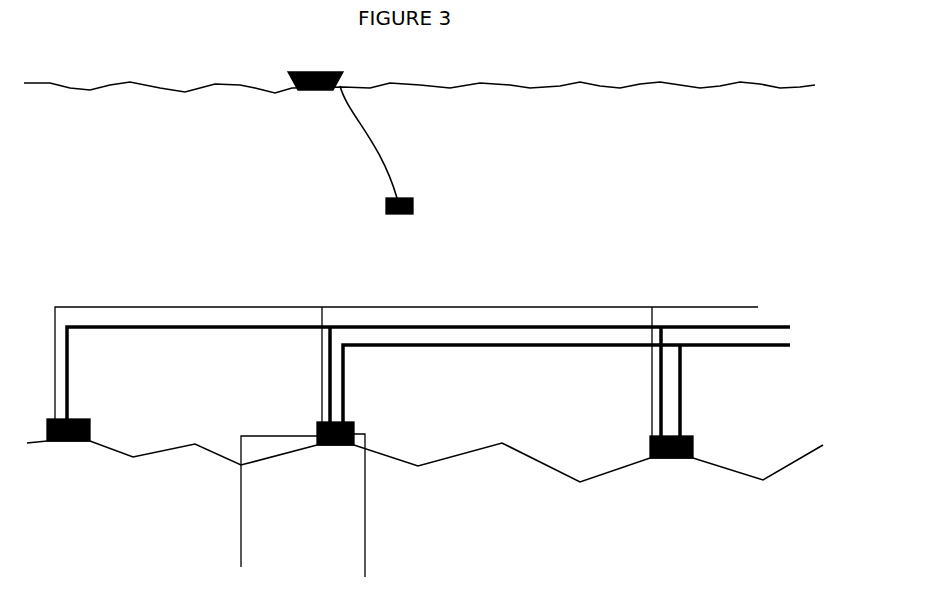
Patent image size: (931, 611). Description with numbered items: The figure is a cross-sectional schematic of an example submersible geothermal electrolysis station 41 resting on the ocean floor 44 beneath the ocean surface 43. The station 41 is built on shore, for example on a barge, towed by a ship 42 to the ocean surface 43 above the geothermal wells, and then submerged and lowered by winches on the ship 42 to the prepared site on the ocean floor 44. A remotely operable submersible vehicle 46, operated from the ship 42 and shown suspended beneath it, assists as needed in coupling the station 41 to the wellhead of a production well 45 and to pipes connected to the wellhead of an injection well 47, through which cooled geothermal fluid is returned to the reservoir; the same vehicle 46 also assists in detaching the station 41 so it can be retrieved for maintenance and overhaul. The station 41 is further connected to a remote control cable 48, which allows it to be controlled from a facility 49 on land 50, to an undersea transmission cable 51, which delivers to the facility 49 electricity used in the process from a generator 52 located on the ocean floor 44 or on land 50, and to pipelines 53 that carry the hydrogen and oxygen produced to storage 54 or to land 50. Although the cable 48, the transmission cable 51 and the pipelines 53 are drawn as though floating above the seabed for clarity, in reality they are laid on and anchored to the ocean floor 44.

The station 41 is at (358, 427).
The ship 42 is at (305, 65).
The ocean surface 43 is at (513, 78).
The ocean floor 44 is at (117, 458).
The production well 45 is at (377, 505).
The remotely operable submersible vehicle 46 is at (393, 152).
The injection well 47 is at (279, 501).
The remote control cable 48 is at (406, 357).
The facility 49 is at (802, 306).
The land 50 is at (820, 336).
The undersea transmission cable 51 is at (428, 381).
The generator 52 is at (60, 445).
The pipelines 53 is at (566, 390).
The storage 54 is at (668, 460).